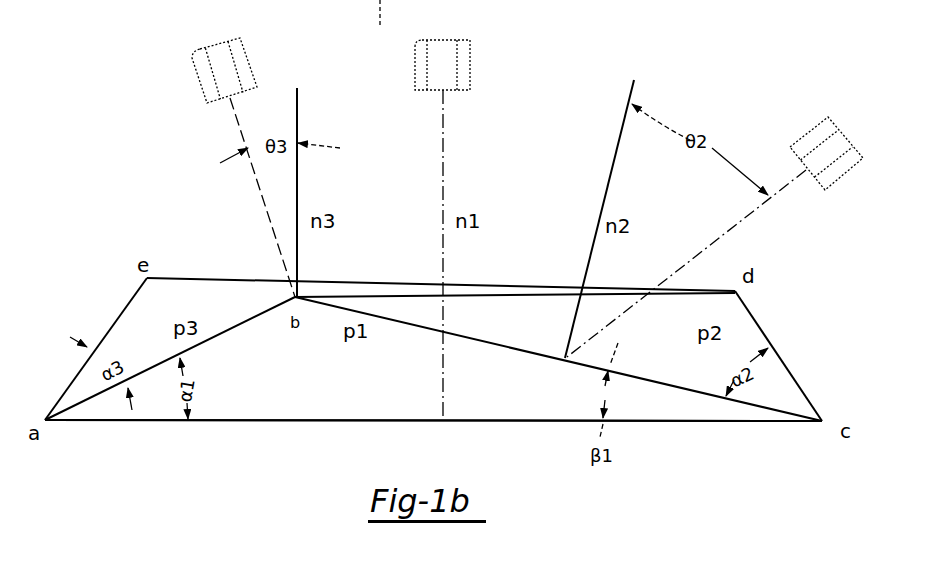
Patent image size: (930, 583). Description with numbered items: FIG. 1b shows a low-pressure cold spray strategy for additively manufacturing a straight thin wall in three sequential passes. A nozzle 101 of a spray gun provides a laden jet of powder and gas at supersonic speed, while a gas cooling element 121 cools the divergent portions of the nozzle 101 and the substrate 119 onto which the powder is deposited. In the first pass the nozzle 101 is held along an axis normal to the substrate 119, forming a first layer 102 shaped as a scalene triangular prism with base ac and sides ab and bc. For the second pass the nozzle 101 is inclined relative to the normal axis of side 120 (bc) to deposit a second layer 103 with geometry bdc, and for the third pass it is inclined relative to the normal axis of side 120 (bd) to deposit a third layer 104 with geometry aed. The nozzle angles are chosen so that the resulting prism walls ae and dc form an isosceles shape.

The nozzle 101 is at (213, 48).
The gas cooling element 121 is at (247, 62).
The first layer 102 is at (257, 393).
The second layer 103 is at (515, 315).
The third layer 104 is at (206, 294).
The substrate 119 is at (315, 420).
The side 120 is at (230, 330).